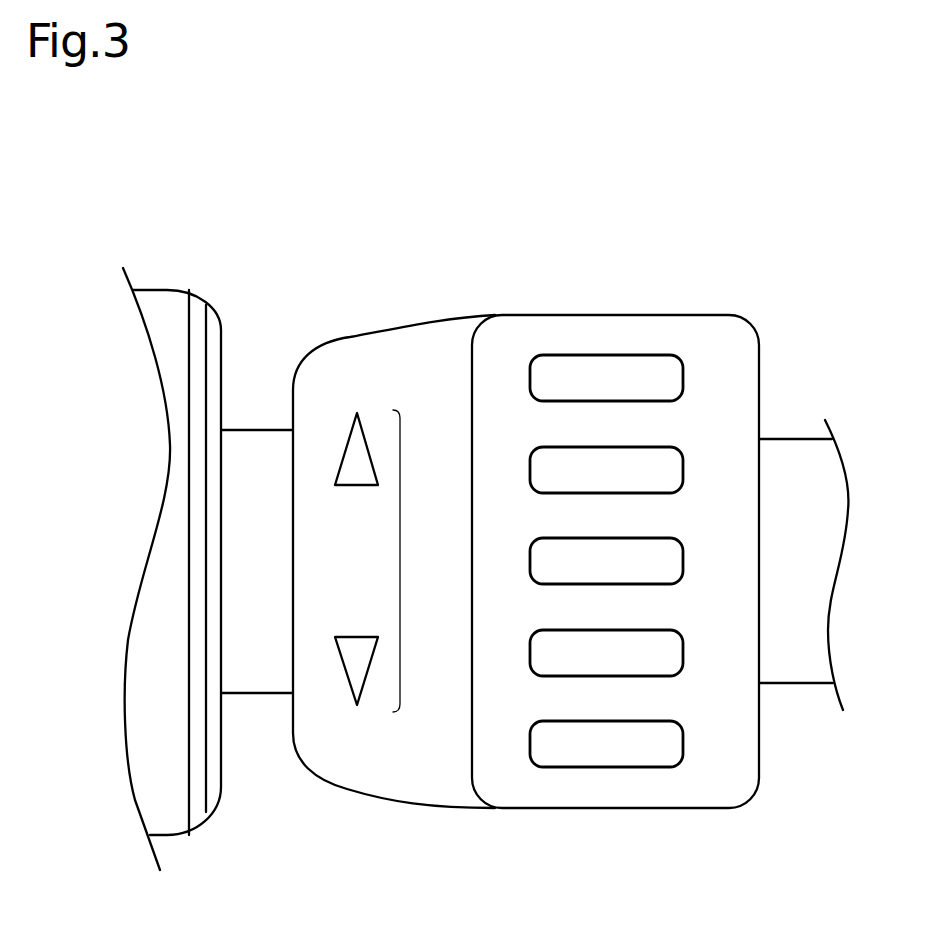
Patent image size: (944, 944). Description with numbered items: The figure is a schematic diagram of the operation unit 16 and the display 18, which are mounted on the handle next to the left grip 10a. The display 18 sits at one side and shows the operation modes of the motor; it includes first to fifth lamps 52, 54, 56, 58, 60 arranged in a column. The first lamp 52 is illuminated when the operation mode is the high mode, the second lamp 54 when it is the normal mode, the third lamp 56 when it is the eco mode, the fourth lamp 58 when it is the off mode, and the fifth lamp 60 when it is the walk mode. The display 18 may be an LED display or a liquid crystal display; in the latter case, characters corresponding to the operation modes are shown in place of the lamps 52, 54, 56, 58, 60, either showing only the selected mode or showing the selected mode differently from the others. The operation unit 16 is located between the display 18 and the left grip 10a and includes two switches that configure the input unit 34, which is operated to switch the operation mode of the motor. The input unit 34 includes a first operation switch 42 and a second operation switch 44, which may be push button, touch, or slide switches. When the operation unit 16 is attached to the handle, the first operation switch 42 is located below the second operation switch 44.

The left grip 10a is at (201, 825).
The operation unit 16 is at (429, 317).
The display 18 is at (544, 315).
The input unit 34 is at (400, 562).
The first operation switch 42 is at (361, 697).
The second operation switch 44 is at (363, 424).
The first lamp 52 is at (684, 370).
The second lamp 54 is at (684, 462).
The third lamp 56 is at (684, 553).
The fourth lamp 58 is at (684, 645).
The fifth lamp 60 is at (684, 736).